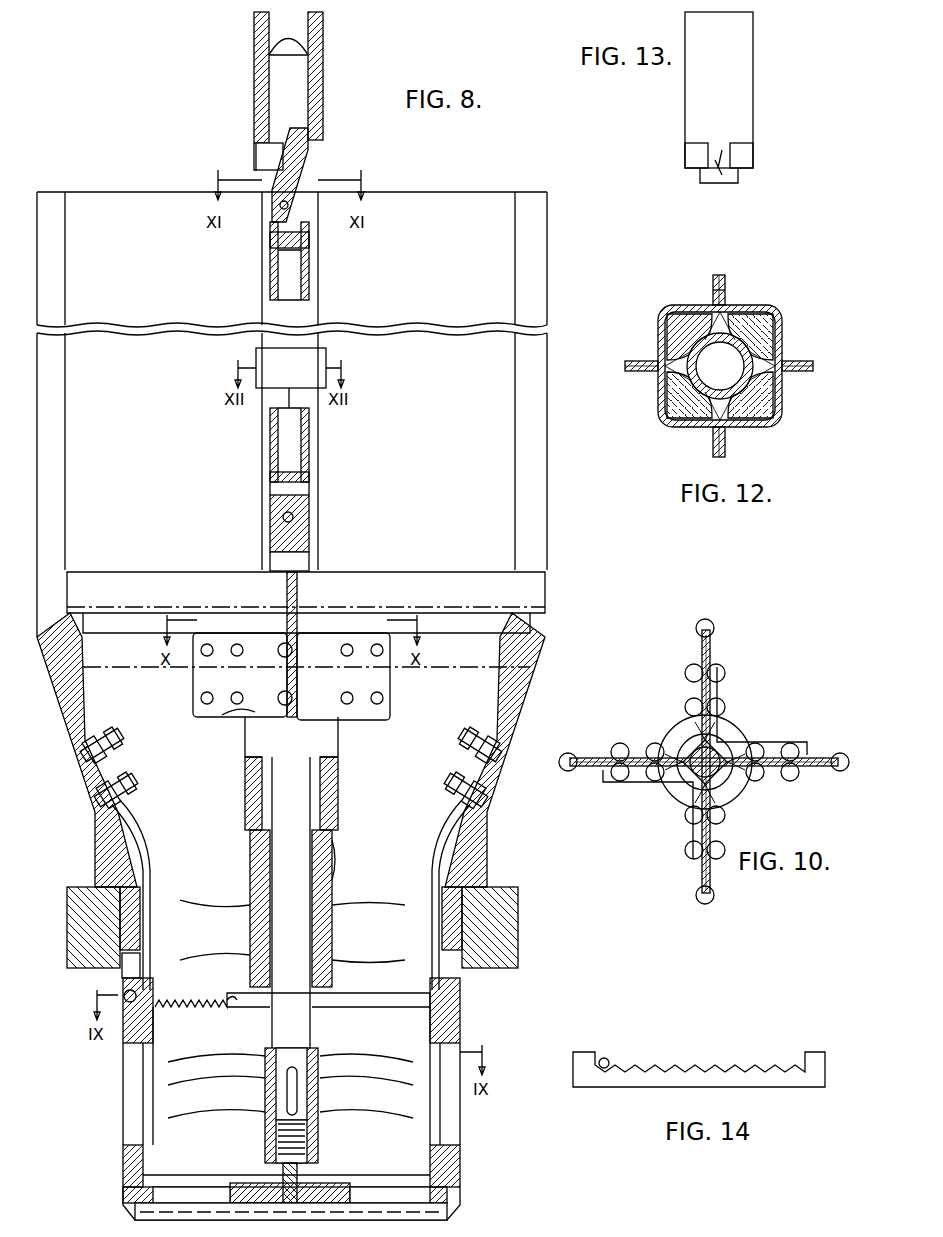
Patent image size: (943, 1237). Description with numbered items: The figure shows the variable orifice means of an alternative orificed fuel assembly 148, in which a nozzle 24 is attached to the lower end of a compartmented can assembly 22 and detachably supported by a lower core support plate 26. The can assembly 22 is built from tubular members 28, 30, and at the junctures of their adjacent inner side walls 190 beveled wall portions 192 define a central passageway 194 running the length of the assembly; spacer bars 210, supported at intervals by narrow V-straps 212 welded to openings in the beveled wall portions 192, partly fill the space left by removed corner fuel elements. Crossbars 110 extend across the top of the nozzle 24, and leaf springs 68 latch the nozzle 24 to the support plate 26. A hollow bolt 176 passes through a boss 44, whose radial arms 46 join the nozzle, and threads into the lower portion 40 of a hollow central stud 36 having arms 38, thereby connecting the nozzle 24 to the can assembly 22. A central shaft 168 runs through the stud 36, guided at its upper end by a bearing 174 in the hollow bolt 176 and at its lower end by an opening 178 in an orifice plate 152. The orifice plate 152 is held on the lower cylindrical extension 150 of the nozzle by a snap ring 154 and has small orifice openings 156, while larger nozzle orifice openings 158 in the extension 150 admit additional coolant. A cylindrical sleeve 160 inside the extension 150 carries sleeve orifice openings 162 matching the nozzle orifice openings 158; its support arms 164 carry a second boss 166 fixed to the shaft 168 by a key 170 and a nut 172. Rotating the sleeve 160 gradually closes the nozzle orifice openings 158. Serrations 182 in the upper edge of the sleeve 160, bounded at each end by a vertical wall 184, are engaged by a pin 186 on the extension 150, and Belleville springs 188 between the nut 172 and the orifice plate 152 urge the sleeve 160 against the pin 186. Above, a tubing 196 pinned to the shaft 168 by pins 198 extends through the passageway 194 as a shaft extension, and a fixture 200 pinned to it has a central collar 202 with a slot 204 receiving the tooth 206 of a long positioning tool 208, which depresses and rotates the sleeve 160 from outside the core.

In FIG. 8, the compartmented can assembly 22 is at (100, 192).
In FIG. 8, the orificed fuel assembly 148 is at (470, 176).
In FIG. 8, the positioning tool 208 is at (323, 40).
In FIG. 13, the positioning tool 208 is at (745, 40).
In FIG. 8, the fixture 200 is at (300, 95).
In FIG. 13, the fixture 200 is at (738, 176).
In FIG. 8, the central collar 202 is at (256, 156).
In FIG. 13, the central collar 202 is at (685, 153).
In FIG. 13, the slot 204 is at (728, 155).
In FIG. 8, the tooth 206 is at (308, 152).
In FIG. 13, the tooth 206 is at (718, 175).
In FIG. 8, the tubing 196 is at (309, 268).
In FIG. 12, the tubing 196 is at (775, 425).
In FIG. 8, the pins 198 is at (287, 208).
In FIG. 8, the central passageway 194 is at (309, 505).
In FIG. 12, the central passageway 194 is at (752, 355).
In FIG. 10, the central passageway 194 is at (730, 780).
In FIG. 12, the beveled wall portions 192 is at (670, 322).
In FIG. 10, the beveled wall portions 192 is at (690, 725).
In FIG. 8, the V-straps 212 is at (291, 378).
In FIG. 12, the V-straps 212 is at (668, 312).
In FIG. 12, the spacer bars 210 is at (690, 310).
In FIG. 8, the central shaft 168 is at (305, 558).
In FIG. 8, the crossbars 110 is at (490, 672).
In FIG. 8, the arms 38 is at (225, 714).
In FIG. 10, the arms 38 is at (730, 700).
In FIG. 8, the central stud 36 is at (322, 742).
In FIG. 10, the central stud 36 is at (660, 742).
In FIG. 8, the bearing 174 is at (258, 850).
In FIG. 8, the lower portion of central stud 40 is at (352, 850).
In FIG. 8, the hollow bolt 176 is at (320, 935).
In FIG. 8, the arms 46 is at (212, 915).
In FIG. 8, the boss 44 is at (332, 900).
In FIG. 8, the leaf springs 68 is at (145, 852).
In FIG. 8, the nozzle 24 is at (528, 869).
In FIG. 8, the lower core support plate 26 is at (510, 937).
In FIG. 8, the pin 186 is at (122, 960).
In FIG. 14, the pin 186 is at (608, 1060).
In FIG. 8, the cylindrical sleeve 160 is at (455, 1000).
In FIG. 14, the cylindrical sleeve 160 is at (698, 1085).
In FIG. 8, the serrations 182 is at (200, 992).
In FIG. 14, the serrations 182 is at (733, 1065).
In FIG. 8, the vertical wall 184 is at (232, 1007).
In FIG. 14, the vertical wall 184 is at (598, 1060).
In FIG. 8, the nozzle orifice openings 158 is at (125, 1080).
In FIG. 8, the sleeve orifice openings 162 is at (153, 1080).
In FIG. 8, the support arms 164 is at (198, 1118).
In FIG. 8, the second boss 166 is at (220, 1050).
In FIG. 8, the key 170 is at (297, 1088).
In FIG. 8, the nut 172 is at (307, 1135).
In FIG. 8, the lower cylindrical extension 150 is at (123, 1162).
In FIG. 8, the opening 178 is at (240, 1180).
In FIG. 8, the Belleville springs 188 is at (300, 1185).
In FIG. 8, the orifice openings 156 is at (180, 1195).
In FIG. 8, the orifice plate 152 is at (455, 1177).
In FIG. 8, the snap ring 154 is at (448, 1206).
In FIG. 12, the tubular members 28 is at (726, 290).
In FIG. 10, the tubular members 28 is at (710, 645).
In FIG. 12, the tubular members 30 is at (712, 282).
In FIG. 10, the tubular members 30 is at (702, 645).
In FIG. 10, the inner side walls 190 is at (545, 765).